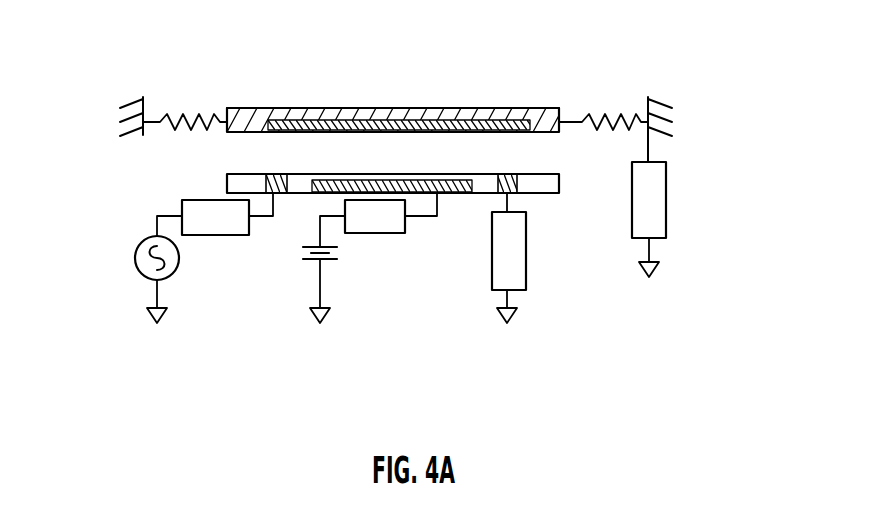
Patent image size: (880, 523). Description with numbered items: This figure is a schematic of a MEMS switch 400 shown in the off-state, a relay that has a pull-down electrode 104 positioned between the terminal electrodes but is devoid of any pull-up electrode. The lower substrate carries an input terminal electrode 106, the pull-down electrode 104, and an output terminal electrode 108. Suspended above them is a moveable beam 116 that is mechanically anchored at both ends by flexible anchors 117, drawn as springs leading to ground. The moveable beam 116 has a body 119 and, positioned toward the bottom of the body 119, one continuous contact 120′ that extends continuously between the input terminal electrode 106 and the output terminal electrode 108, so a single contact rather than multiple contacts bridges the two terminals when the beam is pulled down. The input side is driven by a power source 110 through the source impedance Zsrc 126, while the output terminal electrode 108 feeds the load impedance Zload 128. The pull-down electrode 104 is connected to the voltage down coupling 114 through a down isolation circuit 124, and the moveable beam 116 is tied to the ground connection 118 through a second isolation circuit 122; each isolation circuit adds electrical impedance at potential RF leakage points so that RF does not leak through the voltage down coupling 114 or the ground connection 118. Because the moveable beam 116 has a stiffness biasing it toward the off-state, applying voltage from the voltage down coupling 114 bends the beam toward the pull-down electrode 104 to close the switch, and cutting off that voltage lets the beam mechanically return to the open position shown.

The MEMS switch 400 is at (636, 63).
The moveable beam 116 is at (280, 107).
The body 119 is at (362, 107).
The continuous contact 120′ is at (431, 110).
The flexible anchors 117 is at (182, 114).
The input terminal electrode 106 is at (275, 173).
The pull-down electrode 104 is at (440, 179).
The output terminal electrode 108 is at (505, 173).
The Zsrc 126 is at (182, 199).
The down isolation circuit 124 is at (395, 234).
The second isolation circuit 122 is at (667, 210).
The Zload 128 is at (527, 245).
The voltage down (Vdn) coupling 114 is at (301, 253).
The power source 110 is at (134, 258).
The ground connection 118 is at (165, 318).